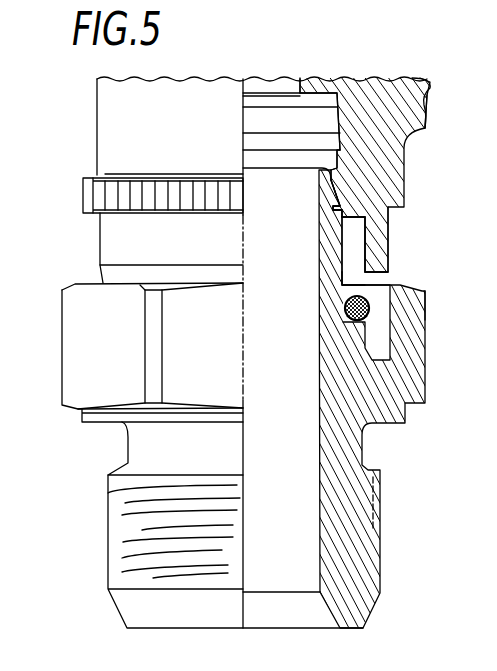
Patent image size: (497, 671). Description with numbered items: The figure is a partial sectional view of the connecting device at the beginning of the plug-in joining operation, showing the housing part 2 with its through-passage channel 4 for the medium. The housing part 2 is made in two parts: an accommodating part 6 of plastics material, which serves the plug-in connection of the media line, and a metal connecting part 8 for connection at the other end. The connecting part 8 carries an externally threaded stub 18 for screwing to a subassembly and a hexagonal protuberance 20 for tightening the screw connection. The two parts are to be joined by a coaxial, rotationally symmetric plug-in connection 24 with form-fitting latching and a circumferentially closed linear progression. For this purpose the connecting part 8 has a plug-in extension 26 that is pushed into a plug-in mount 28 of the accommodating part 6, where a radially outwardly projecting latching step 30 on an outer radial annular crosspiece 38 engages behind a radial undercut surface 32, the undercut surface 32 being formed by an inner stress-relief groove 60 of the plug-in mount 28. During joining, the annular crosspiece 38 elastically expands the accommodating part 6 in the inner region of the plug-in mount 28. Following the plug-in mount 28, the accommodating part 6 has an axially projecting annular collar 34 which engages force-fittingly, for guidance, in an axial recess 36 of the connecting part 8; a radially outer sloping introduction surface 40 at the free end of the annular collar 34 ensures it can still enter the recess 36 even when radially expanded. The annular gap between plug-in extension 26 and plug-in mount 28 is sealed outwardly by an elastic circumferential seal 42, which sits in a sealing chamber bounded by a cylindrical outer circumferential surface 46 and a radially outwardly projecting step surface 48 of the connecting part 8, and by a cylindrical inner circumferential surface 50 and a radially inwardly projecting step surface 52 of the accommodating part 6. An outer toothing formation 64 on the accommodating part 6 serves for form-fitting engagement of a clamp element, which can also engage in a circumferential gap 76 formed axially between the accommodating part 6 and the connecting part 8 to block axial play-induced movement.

The housing part 2 is at (461, 125).
The through-passage channel 4 is at (297, 553).
The accommodating part 6 is at (379, 113).
The connecting part 8 is at (368, 401).
The externally threaded stub 18 is at (127, 548).
The hexagonal protuberance 20 is at (95, 377).
The plug-in connection 24 is at (352, 179).
The plug-in extension 26 is at (325, 222).
The plug-in mount 28 is at (303, 157).
The latching step 30 is at (342, 215).
The radial undercut surface 32 is at (328, 138).
The annular collar 34 is at (377, 256).
The axial recess 36 is at (496, 358).
The annular crosspiece 38 is at (338, 199).
The sloping introduction surface 40 is at (397, 277).
The circumferential seal 42 is at (370, 315).
The cylindrical outer circumferential surface 46 is at (341, 283).
The step surface 48 is at (360, 335).
The cylindrical inner circumferential surface 50 is at (373, 236).
The step surface 52 is at (350, 218).
The inner stress-relief groove 60 is at (339, 142).
The outer toothing formation 64 is at (112, 191).
The circumferential gap 76 is at (461, 289).